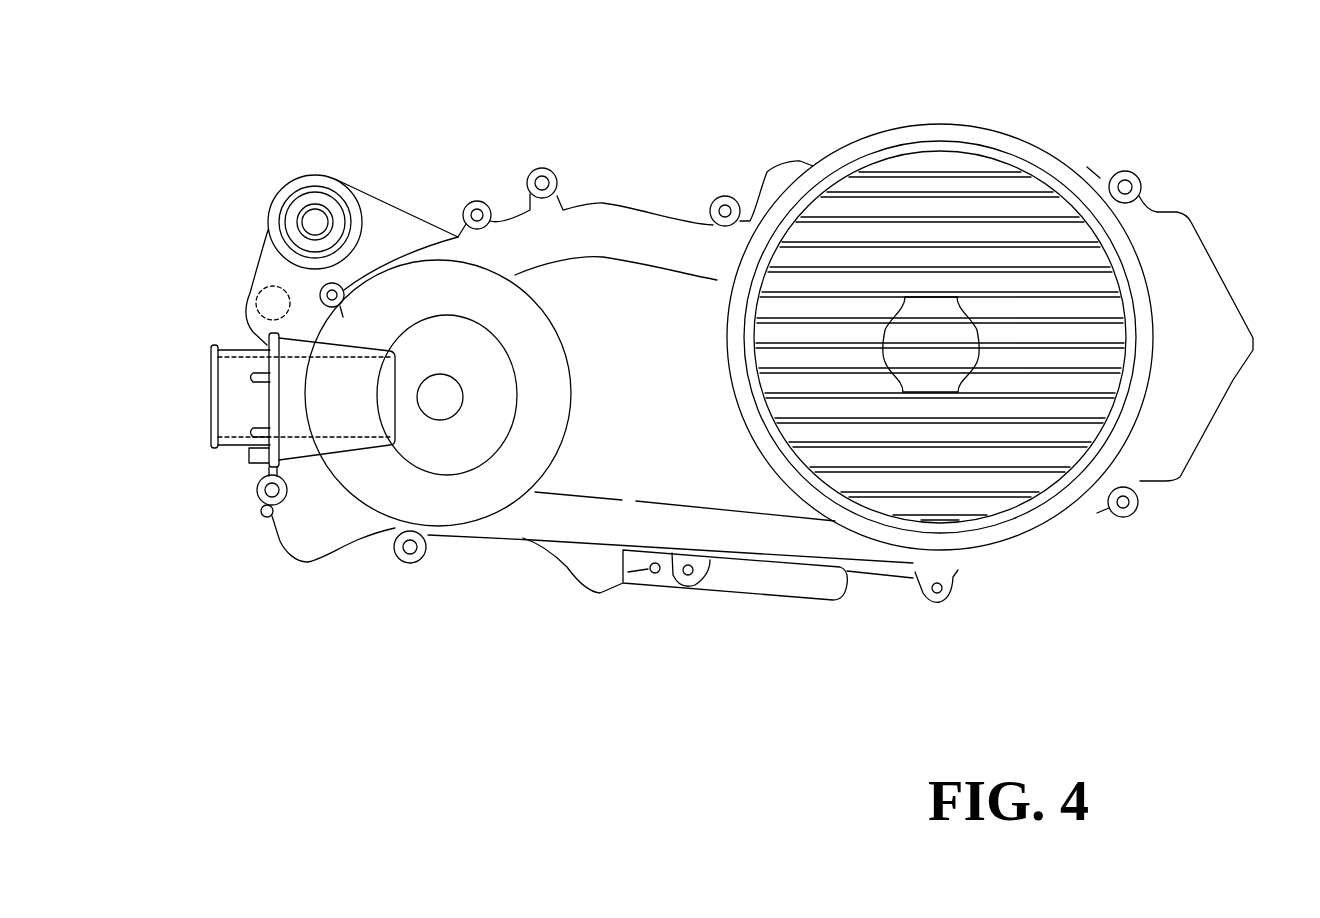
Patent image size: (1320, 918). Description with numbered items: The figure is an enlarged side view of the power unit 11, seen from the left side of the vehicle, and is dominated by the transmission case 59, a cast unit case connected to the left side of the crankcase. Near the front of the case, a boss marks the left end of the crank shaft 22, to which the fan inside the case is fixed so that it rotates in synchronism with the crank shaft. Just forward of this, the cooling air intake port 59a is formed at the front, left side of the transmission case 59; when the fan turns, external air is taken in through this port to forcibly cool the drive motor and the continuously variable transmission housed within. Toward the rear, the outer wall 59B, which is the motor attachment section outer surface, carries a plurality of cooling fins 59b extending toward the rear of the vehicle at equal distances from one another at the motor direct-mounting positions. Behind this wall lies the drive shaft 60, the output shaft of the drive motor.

The power unit 11 is at (497, 578).
The crank shaft 22 is at (425, 403).
The transmission case 59 is at (620, 278).
The cooling air intake port 59a is at (198, 418).
The cooling fins 59b is at (1000, 190).
The outer wall 59B is at (1010, 452).
The drive shaft 60 is at (932, 355).